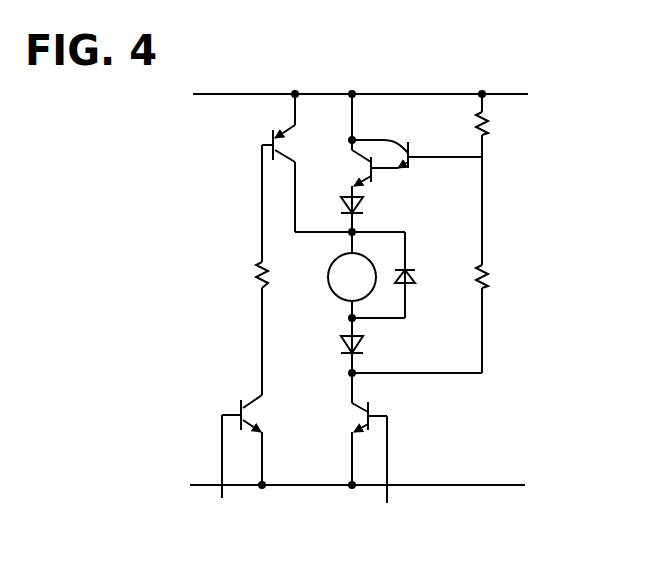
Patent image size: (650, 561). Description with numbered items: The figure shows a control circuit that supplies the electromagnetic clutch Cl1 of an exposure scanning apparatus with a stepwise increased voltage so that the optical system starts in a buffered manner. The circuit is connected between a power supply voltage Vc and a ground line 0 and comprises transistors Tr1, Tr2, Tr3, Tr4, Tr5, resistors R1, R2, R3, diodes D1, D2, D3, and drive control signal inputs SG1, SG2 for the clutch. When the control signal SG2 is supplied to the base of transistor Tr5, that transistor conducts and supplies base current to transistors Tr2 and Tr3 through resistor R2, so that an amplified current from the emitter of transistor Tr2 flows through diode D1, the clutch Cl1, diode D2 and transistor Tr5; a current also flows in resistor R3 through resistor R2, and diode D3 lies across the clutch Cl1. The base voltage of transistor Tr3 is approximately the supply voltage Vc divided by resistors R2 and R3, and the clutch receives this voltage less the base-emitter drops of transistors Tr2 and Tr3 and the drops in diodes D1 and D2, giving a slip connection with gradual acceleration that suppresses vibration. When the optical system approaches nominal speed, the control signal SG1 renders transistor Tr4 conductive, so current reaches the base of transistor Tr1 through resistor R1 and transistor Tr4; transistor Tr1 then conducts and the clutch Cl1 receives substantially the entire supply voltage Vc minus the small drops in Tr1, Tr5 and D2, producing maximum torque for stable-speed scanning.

The power supply voltage Vc is at (347, 96).
The ground terminal 0 is at (348, 486).
The transistor Tr1 is at (285, 137).
The transistor Tr2 is at (362, 170).
The transistor Tr3 is at (407, 151).
The transistor Tr4 is at (250, 409).
The transistor Tr5 is at (356, 423).
The resistor R1 is at (268, 273).
The resistor R2 is at (491, 124).
The resistor R3 is at (491, 273).
The diode D1 is at (363, 209).
The diode D2 is at (365, 347).
The diode D3 is at (420, 273).
The electromagnetic clutch Cl1 is at (350, 275).
The drive control signal input SG1 is at (223, 474).
The drive control signal input SG2 is at (383, 476).